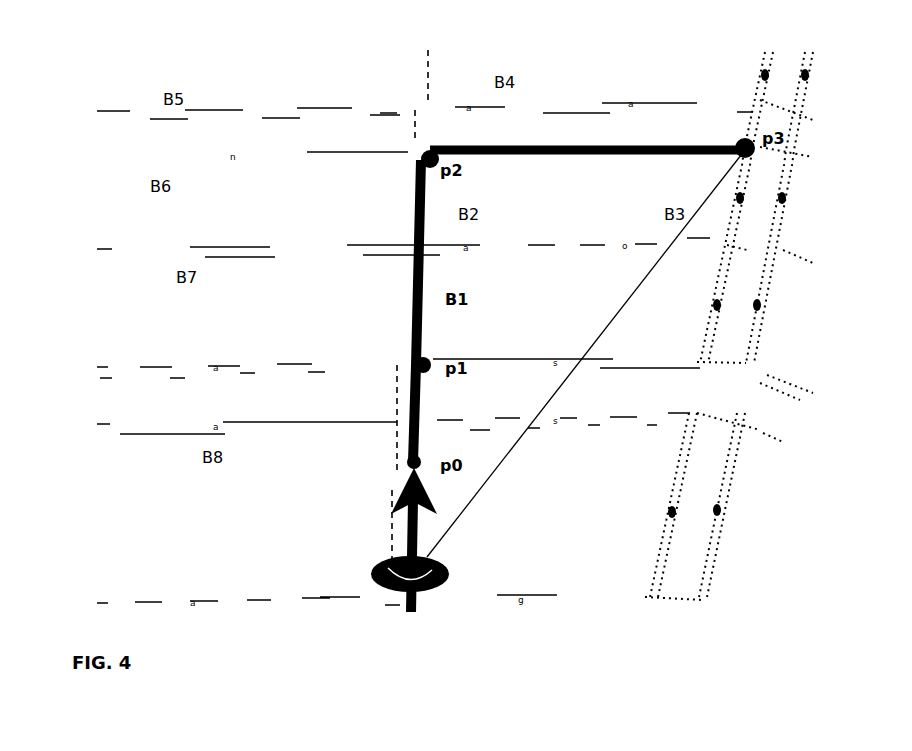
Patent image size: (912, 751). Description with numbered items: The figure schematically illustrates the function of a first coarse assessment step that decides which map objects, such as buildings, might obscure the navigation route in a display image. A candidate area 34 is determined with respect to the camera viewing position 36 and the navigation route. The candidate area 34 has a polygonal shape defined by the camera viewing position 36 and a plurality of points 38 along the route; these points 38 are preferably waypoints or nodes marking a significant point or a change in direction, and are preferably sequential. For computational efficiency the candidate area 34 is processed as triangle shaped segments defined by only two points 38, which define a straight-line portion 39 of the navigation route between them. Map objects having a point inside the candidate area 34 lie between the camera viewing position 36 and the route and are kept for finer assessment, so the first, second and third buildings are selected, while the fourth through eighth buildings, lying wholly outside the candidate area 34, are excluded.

The candidate area 34 is at (492, 392).
The camera viewing position 36 is at (371, 572).
The points along the navigation route 38 is at (428, 150).
The straight-line portion of the navigation route 39 is at (587, 148).